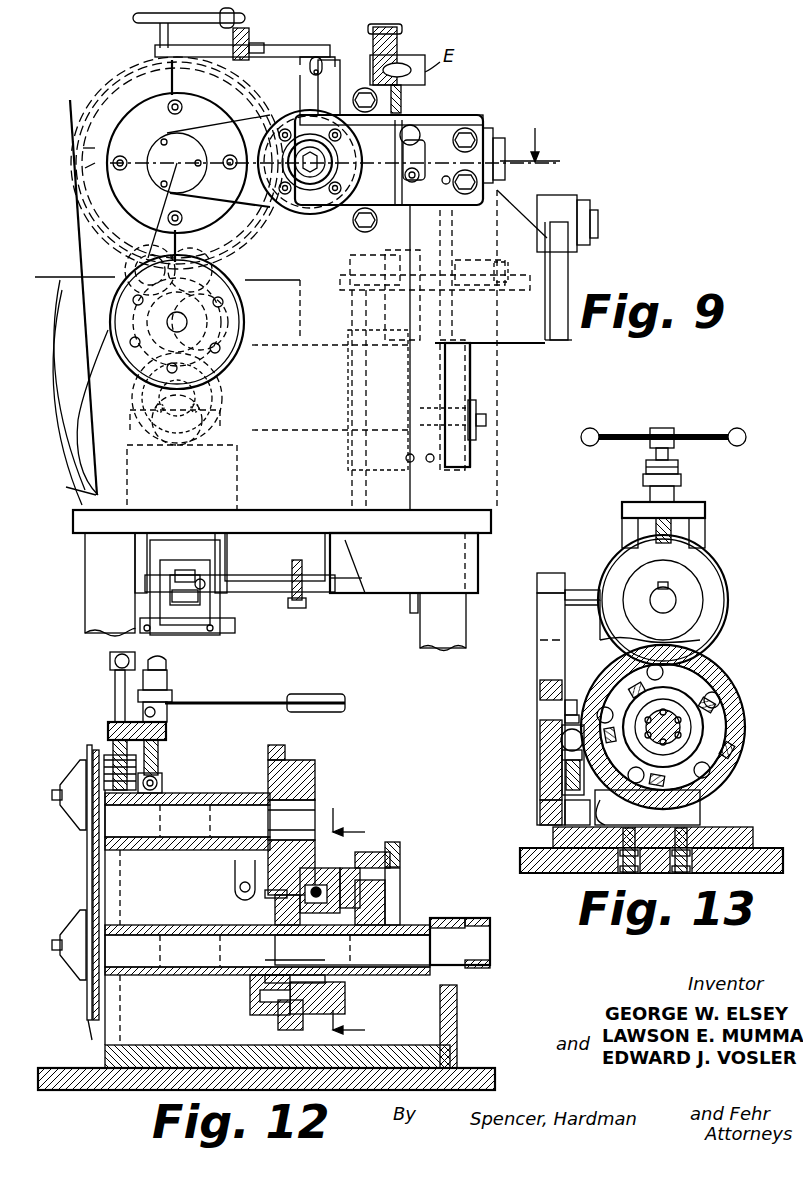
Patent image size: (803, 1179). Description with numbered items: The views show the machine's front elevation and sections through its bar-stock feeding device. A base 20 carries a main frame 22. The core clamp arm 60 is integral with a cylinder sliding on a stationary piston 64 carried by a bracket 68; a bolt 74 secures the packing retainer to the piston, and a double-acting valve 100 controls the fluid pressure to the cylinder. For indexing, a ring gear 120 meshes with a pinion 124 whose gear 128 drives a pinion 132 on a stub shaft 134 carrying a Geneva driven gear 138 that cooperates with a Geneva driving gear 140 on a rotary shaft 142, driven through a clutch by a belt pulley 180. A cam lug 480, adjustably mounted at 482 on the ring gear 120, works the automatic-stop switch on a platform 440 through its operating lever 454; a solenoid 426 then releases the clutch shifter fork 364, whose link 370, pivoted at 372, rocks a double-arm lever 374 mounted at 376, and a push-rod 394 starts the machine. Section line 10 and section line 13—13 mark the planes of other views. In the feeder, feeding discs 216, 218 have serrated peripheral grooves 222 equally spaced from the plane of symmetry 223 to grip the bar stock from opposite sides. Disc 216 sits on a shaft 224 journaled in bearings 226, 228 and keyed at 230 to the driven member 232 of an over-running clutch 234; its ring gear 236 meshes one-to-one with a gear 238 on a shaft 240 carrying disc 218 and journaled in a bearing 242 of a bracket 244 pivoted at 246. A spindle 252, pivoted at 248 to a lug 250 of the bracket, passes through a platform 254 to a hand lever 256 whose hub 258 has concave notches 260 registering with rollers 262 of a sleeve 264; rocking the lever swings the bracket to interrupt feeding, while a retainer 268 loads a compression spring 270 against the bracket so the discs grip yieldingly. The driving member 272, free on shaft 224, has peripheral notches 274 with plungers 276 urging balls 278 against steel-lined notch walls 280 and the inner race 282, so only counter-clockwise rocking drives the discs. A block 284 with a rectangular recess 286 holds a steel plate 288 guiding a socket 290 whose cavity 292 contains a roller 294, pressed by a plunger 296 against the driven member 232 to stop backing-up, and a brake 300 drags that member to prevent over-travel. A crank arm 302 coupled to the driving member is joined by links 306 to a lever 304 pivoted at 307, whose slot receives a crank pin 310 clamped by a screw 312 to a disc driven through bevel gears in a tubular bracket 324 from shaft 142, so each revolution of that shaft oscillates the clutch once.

In FIG. 9, the section line 10 is at (44, 245).
In FIG. 12, the section line 13— 13 is at (349, 921).
In FIG. 9, the base 20 is at (478, 520).
In FIG. 13, the base 20 is at (522, 863).
In FIG. 12, the base 20 is at (80, 1075).
In FIG. 9, the main frame 22 is at (92, 494).
In FIG. 13, the main frame 22 is at (540, 812).
In FIG. 12, the main frame 22 is at (492, 1019).
In FIG. 9, the extending arm 60 is at (262, 205).
In FIG. 9, the stationary piston 64 is at (310, 205).
In FIG. 9, the bracket 68 is at (445, 125).
In FIG. 9, the bolt 74 is at (322, 158).
In FIG. 9, the double-acting valve 100 is at (317, 75).
In FIG. 9, the ring gear 120 is at (92, 208).
In FIG. 9, the pinion 124 is at (122, 284).
In FIG. 9, the gear 128 is at (122, 278).
In FIG. 9, the pinion 132 is at (200, 300).
In FIG. 9, the stub shaft 134 is at (167, 322).
In FIG. 9, the Geneva driven gear 138 is at (231, 311).
In FIG. 9, the Geneva driving gear 140 is at (163, 422).
In FIG. 9, the rotary shaft 142 is at (165, 395).
In FIG. 9, the pulley 180 is at (74, 353).
In FIG. 12, the feeding disc 216 is at (86, 1000).
In FIG. 12, the feeding disc 218 is at (92, 768).
In FIG. 12, the peripheral grooves 222 is at (88, 782).
In FIG. 12, the plane of symmetry 223 is at (86, 746).
In FIG. 9, the shaft 224 is at (598, 222).
In FIG. 13, the shaft 224 is at (660, 720).
In FIG. 12, the shaft 224 is at (128, 940).
In FIG. 12, the bearing 226 is at (180, 925).
In FIG. 12, the bearing 228 is at (440, 920).
In FIG. 12, the key 230 is at (277, 938).
In FIG. 13, the driven member 232 is at (647, 807).
In FIG. 12, the driven member 232 is at (283, 1024).
In FIG. 13, the over-running clutch 234 is at (783, 678).
In FIG. 12, the over-running clutch 234 is at (395, 848).
In FIG. 12, the ring gear 236 is at (265, 894).
In FIG. 9, the gear 238 is at (398, 36).
In FIG. 13, the gear 238 is at (718, 565).
In FIG. 12, the gear 238 is at (286, 758).
In FIG. 13, the shaft 240 is at (678, 600).
In FIG. 12, the shaft 240 is at (200, 812).
In FIG. 12, the bearing 242 is at (205, 793).
In FIG. 12, the bracket 244 is at (264, 793).
In FIG. 12, the pivot 246 is at (244, 877).
In FIG. 12, the pivot 248 is at (160, 773).
In FIG. 12, the lug 250 is at (158, 783).
In FIG. 13, the spindle 252 is at (672, 530).
In FIG. 12, the spindle 252 is at (160, 750).
In FIG. 13, the platform 254 is at (706, 508).
In FIG. 12, the platform 254 is at (113, 722).
In FIG. 13, the hand lever 256 is at (680, 470).
In FIG. 12, the hand lever 256 is at (260, 702).
In FIG. 12, the hub 258 is at (165, 672).
In FIG. 12, the concave notches 260 is at (166, 684).
In FIG. 13, the rollers 262 is at (682, 486).
In FIG. 12, the rollers 262 is at (172, 698).
In FIG. 13, the sleeve 264 is at (650, 490).
In FIG. 12, the sleeve 264 is at (167, 717).
In FIG. 13, the retainer 268 is at (656, 445).
In FIG. 12, the retainer 268 is at (113, 748).
In FIG. 12, the compression spring 270 is at (107, 767).
In FIG. 13, the driving member 272 is at (715, 735).
In FIG. 12, the driving member 272 is at (346, 1000).
In FIG. 13, the peripheral notches 274 is at (720, 750).
In FIG. 13, the spring-urged plungers 276 is at (716, 762).
In FIG. 13, the balls 278 is at (705, 780).
In FIG. 12, the balls 278 is at (318, 868).
In FIG. 13, the notch walls 280 is at (728, 708).
In FIG. 13, the inner race 282 is at (732, 717).
In FIG. 13, the block 284 is at (562, 790).
In FIG. 13, the rectangular recess 286 is at (562, 755).
In FIG. 13, the steel plate 288 is at (562, 738).
In FIG. 13, the socket 290 is at (565, 718).
In FIG. 13, the cavity 292 is at (566, 775).
In FIG. 13, the roller 294 is at (565, 705).
In FIG. 13, the spring-urged plunger 296 is at (583, 812).
In FIG. 13, the brake 300 is at (695, 814).
In FIG. 12, the crank arm 302 is at (386, 906).
In FIG. 9, the lever 304 is at (472, 372).
In FIG. 9, the links 306 is at (497, 138).
In FIG. 12, the links 306 is at (400, 855).
In FIG. 9, the pivot 307 is at (502, 277).
In FIG. 9, the crank pin 310 is at (476, 410).
In FIG. 9, the screw 312 is at (487, 420).
In FIG. 9, the tubular bracket 324 is at (315, 430).
In FIG. 9, the shifter fork 364 is at (144, 565).
In FIG. 9, the link 370 is at (180, 604).
In FIG. 9, the pivot 372 is at (185, 570).
In FIG. 9, the double-arm lever 374 is at (263, 592).
In FIG. 9, the pivot 376 is at (302, 604).
In FIG. 9, the push-rod 394 is at (402, 98).
In FIG. 9, the solenoid 426 is at (190, 633).
In FIG. 9, the platform 440 is at (153, 50).
In FIG. 9, the operating lever 454 is at (136, 19).
In FIG. 9, the cam lug 480 is at (88, 148).
In FIG. 9, the adjustable mounting 482 is at (90, 166).